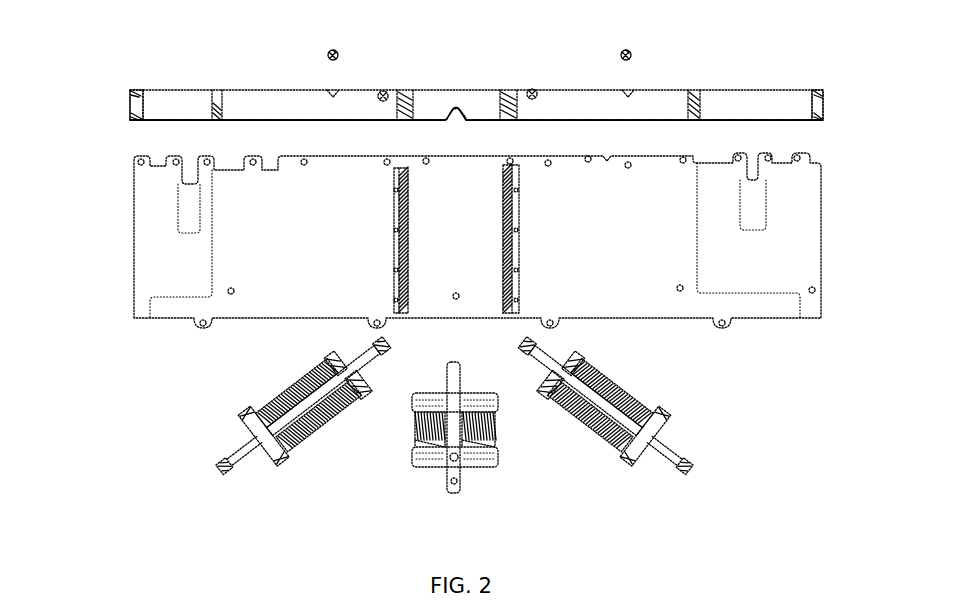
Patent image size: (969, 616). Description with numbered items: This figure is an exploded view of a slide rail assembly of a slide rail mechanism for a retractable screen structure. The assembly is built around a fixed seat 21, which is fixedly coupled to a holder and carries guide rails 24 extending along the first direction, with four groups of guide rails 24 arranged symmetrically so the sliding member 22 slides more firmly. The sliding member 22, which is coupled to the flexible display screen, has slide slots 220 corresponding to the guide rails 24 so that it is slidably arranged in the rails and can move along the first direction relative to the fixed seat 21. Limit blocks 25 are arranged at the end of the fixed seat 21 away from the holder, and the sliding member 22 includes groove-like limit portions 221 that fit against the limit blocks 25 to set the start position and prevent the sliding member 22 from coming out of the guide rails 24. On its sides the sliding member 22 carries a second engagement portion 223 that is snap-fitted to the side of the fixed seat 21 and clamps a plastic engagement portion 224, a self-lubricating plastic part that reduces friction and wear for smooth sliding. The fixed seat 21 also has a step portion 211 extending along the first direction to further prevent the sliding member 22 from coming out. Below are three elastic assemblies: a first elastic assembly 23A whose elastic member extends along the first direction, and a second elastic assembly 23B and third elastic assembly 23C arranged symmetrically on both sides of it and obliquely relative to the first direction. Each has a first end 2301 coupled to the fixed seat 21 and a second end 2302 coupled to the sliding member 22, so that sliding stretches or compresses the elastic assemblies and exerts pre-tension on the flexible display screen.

The fixed seat 21 is at (652, 298).
The step portion 211 is at (212, 252).
The sliding member 22 is at (740, 100).
The slide slot 220 is at (508, 108).
The limit portion 221 is at (333, 94).
The second engagement portion 223 is at (137, 103).
The plastic engagement portion 224 is at (217, 105).
The guide rail 24 is at (397, 238).
The limit block 25 is at (333, 50).
The first elastic assembly 23A is at (420, 437).
The second elastic assembly 23B is at (317, 430).
The third elastic assembly 23C is at (592, 424).
The first end 2301 is at (222, 465).
The second end 2302 is at (366, 355).